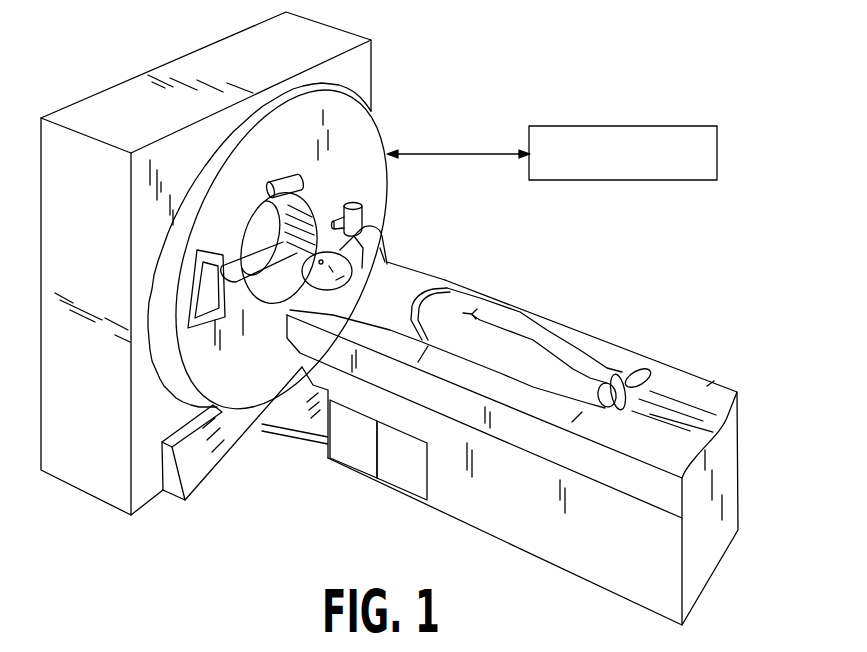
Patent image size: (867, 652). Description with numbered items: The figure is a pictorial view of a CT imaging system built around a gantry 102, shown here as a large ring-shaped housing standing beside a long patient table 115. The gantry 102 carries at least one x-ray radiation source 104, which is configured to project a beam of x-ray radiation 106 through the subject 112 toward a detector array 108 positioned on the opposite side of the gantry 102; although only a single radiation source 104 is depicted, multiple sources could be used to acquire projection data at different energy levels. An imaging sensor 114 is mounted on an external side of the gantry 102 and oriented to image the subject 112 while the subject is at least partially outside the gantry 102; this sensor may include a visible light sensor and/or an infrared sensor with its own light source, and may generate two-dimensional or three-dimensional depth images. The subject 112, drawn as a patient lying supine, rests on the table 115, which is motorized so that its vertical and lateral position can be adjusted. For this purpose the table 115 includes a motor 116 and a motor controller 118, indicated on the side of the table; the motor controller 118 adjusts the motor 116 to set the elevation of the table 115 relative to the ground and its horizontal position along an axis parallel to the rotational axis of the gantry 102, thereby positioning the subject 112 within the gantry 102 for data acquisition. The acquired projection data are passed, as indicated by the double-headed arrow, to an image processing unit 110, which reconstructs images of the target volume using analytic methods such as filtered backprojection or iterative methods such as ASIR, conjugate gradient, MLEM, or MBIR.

The gantry 102 is at (282, 249).
The x-ray radiation source 104 is at (363, 220).
The beam of x-ray radiation 106 is at (253, 267).
The detector array 108 is at (206, 323).
The image processing unit 110 is at (676, 125).
The subject 112 is at (400, 282).
The imaging sensor 114 is at (283, 176).
The table 115 is at (725, 395).
The motor 116 is at (353, 439).
The motor controller 118 is at (402, 460).